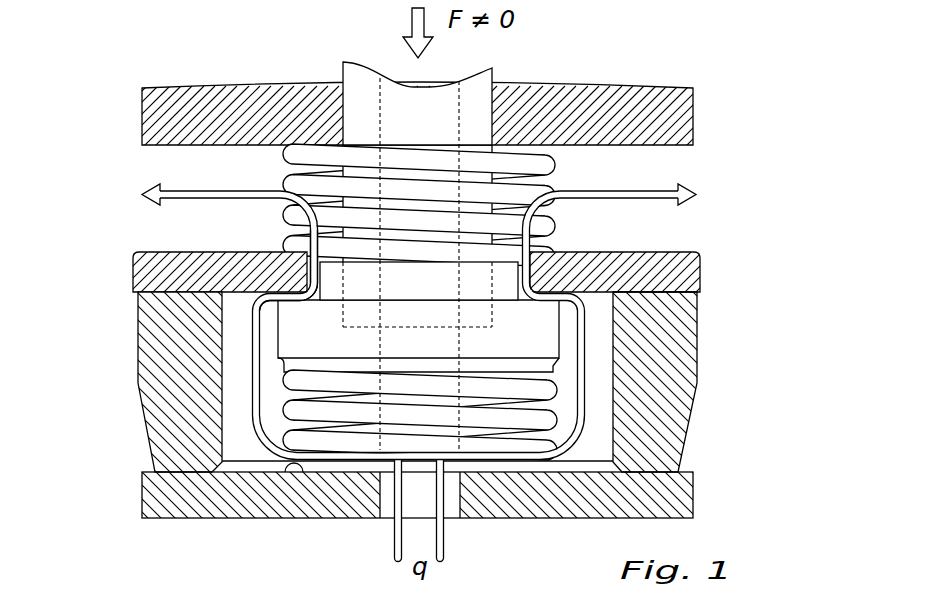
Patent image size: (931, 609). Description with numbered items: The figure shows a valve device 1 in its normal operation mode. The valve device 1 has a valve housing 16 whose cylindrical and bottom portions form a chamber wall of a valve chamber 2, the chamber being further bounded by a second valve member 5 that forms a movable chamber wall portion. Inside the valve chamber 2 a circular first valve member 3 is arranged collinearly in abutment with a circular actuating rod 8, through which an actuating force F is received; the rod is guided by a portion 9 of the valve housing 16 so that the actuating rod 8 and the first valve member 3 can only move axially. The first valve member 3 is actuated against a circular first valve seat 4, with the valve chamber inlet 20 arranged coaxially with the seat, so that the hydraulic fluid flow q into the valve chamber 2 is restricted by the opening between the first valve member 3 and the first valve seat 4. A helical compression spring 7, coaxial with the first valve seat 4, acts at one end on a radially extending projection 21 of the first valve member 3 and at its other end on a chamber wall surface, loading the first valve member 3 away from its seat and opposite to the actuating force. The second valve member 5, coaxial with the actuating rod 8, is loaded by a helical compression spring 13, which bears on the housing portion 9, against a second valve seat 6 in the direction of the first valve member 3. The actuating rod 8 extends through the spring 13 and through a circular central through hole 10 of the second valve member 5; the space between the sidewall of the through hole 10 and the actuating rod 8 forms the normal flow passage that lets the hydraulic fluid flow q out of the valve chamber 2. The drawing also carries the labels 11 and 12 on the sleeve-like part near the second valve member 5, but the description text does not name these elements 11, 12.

The valve device 1 is at (750, 506).
The valve chamber 2 is at (605, 393).
The first valve member 3 is at (625, 470).
The first valve seat 4 is at (475, 473).
The second valve member 5 is at (685, 272).
The second valve seat 6 is at (672, 295).
The helical compression spring 7 is at (490, 445).
The actuating rod 8 is at (480, 80).
The portion of the valve housing 9 is at (631, 107).
The through hole 10 is at (317, 275).
The sleeve 11 is at (323, 302).
The sleeve shoulder 12 is at (282, 300).
The helical compression spring 13 is at (547, 158).
The valve housing 16 is at (160, 438).
The valve chamber inlet 20 is at (387, 508).
The radially extending projection 21 is at (555, 327).